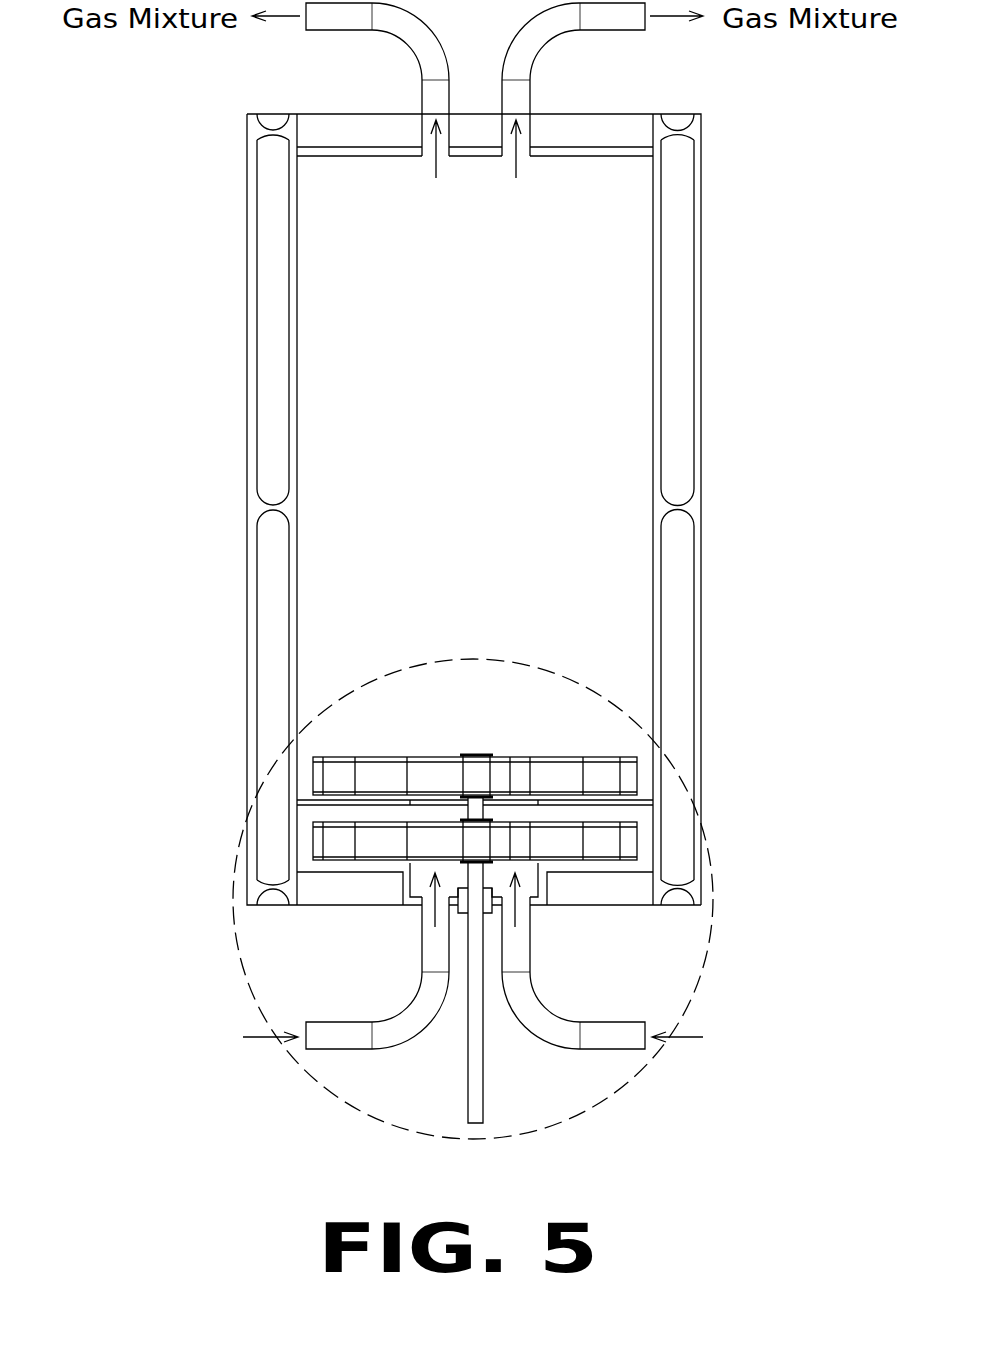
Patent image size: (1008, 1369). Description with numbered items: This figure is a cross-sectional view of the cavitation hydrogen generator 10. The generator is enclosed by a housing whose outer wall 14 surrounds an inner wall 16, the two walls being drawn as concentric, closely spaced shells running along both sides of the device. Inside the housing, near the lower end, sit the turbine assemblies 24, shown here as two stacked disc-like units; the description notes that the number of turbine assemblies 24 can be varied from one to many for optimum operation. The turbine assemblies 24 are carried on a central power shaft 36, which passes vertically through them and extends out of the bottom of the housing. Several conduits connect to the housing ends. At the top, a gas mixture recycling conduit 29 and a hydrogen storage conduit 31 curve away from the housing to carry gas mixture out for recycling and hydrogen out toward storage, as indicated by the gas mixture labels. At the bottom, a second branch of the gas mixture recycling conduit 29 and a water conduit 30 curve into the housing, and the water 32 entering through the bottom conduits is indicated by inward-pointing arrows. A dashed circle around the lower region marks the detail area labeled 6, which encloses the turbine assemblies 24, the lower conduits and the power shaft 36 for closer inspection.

The cavitation hydrogen generator 10 is at (230, 393).
The outer wall 14 is at (247, 625).
The inner wall 16 is at (653, 568).
The turbine assembly 24 is at (600, 765).
The gas mixture recycling conduit 29 is at (420, 63).
The water conduit 30 is at (530, 966).
The hydrogen storage conduit 31 is at (532, 65).
The water 32 is at (683, 1037).
The power shaft 36 is at (392, 973).
The detail view circle (FIG. 6) 6 is at (598, 1105).